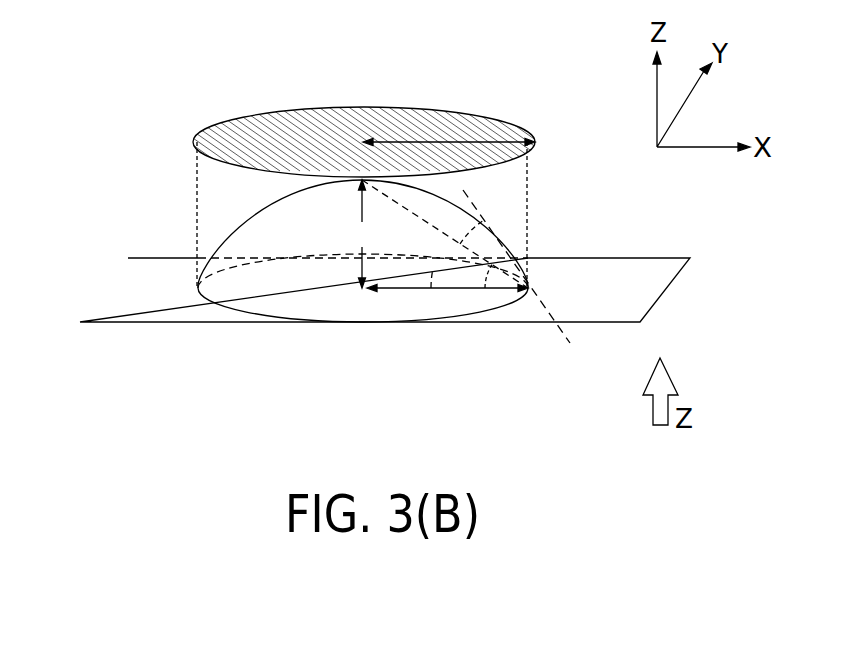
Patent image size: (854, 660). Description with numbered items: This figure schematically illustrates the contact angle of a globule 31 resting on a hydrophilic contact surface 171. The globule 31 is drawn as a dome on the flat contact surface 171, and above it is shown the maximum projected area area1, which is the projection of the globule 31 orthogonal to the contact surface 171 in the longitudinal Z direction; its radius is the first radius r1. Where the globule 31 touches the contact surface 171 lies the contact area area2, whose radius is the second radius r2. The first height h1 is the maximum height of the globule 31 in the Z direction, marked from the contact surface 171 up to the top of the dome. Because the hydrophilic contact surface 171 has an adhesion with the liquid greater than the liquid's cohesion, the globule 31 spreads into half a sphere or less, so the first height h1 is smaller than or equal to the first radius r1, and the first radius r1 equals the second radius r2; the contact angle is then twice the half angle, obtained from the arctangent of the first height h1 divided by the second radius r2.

The globule 31 is at (257, 213).
The hydrophilic contact surface 171 is at (623, 273).
The maximum projected area area1 is at (212, 137).
The contact area area2 is at (225, 278).
The first radius r1 is at (458, 140).
The second radius r2 is at (402, 288).
The first height h1 is at (360, 234).